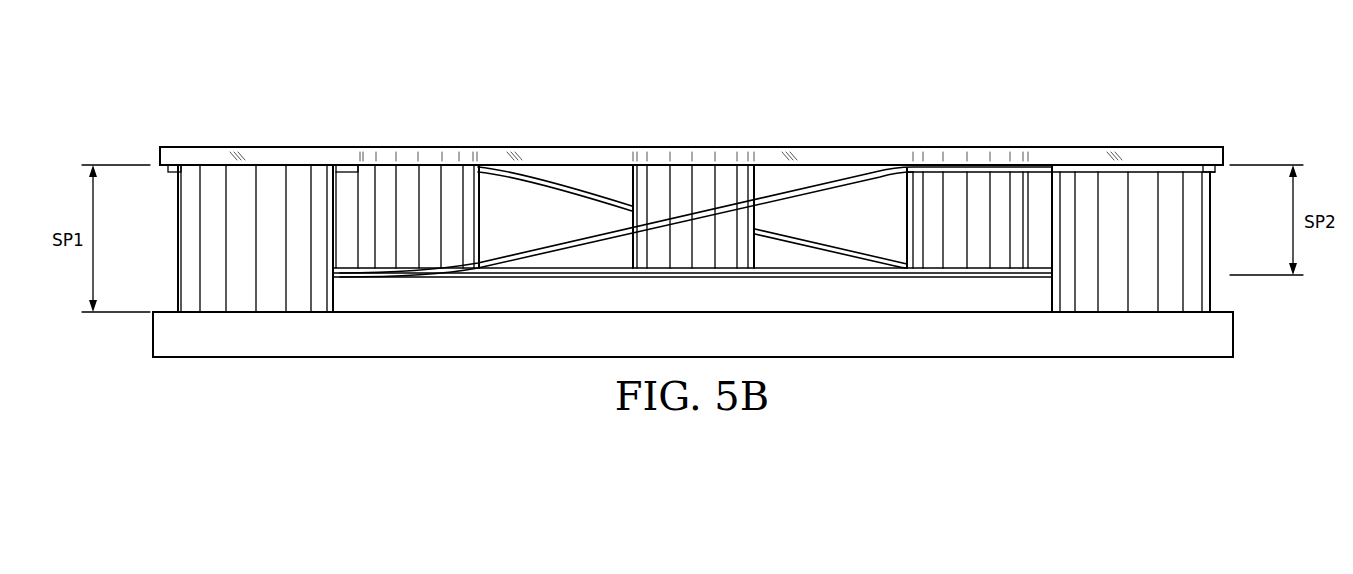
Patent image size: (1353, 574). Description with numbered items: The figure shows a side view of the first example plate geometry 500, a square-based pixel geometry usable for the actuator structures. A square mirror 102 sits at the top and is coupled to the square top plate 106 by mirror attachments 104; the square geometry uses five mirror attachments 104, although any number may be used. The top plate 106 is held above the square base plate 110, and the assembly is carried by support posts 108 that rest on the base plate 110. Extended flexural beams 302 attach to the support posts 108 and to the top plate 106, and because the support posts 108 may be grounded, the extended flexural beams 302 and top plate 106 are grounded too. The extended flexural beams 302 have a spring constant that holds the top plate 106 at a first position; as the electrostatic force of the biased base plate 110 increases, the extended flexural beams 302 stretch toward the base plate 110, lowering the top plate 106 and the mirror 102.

The first example plate geometry 500 is at (350, 108).
The mirror 102 is at (556, 147).
The base plate 110 is at (153, 333).
The support posts 108 is at (178, 242).
The mirror attachments 104 is at (482, 220).
The top plate 106 is at (543, 273).
The extended flexural beams 302 is at (608, 192).